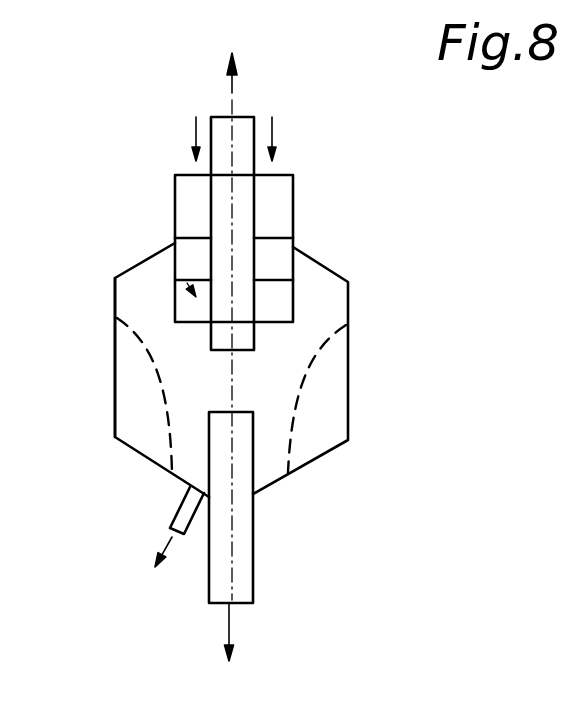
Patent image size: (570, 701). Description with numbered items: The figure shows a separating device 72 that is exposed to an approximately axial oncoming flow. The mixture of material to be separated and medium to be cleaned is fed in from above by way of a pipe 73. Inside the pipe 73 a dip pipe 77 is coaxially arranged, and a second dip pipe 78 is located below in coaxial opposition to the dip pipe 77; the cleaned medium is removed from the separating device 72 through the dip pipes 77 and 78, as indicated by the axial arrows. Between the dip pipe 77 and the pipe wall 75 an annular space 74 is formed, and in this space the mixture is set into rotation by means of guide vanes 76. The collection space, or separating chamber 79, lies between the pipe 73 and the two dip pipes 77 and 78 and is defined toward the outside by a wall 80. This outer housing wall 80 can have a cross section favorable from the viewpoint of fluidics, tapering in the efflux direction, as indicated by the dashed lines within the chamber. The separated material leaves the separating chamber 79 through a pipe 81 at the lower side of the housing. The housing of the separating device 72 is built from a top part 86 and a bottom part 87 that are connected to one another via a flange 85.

The separating device 72 is at (347, 220).
The pipe 73 is at (291, 173).
The annular space 74 is at (175, 277).
The pipe wall 75 is at (175, 298).
The guide vanes 76 is at (192, 262).
The dip pipe 77 is at (243, 238).
The dip pipe 78 is at (240, 547).
The separating chamber 79 is at (270, 362).
The wall 80 is at (115, 394).
The pipe 81 is at (183, 515).
The flange 85 is at (115, 317).
The top part 86 is at (376, 266).
The bottom part 87 is at (377, 440).